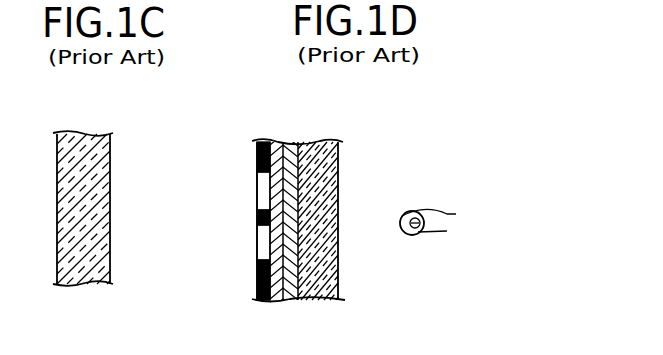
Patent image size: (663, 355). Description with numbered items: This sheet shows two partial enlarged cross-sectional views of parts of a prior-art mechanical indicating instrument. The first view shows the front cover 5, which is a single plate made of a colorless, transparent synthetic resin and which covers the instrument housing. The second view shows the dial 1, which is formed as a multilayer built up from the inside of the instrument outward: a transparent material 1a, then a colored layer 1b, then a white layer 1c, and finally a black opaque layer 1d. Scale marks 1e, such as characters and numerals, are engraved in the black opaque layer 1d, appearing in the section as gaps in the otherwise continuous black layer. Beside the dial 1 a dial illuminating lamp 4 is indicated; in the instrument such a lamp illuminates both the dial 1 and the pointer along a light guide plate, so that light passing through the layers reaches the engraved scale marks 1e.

In FIG. 1C, the front cover 5 is at (65, 134).
In FIG. 1D, the dial 1 is at (295, 313).
In FIG. 1D, the transparent material 1a is at (332, 183).
In FIG. 1D, the colored layer 1b is at (290, 142).
In FIG. 1D, the white layer 1c is at (277, 142).
In FIG. 1D, the black opaque layer 1d is at (262, 142).
In FIG. 1D, the scale marks 1e is at (262, 240).
In FIG. 1D, the dial illuminating lamp 4 is at (434, 220).